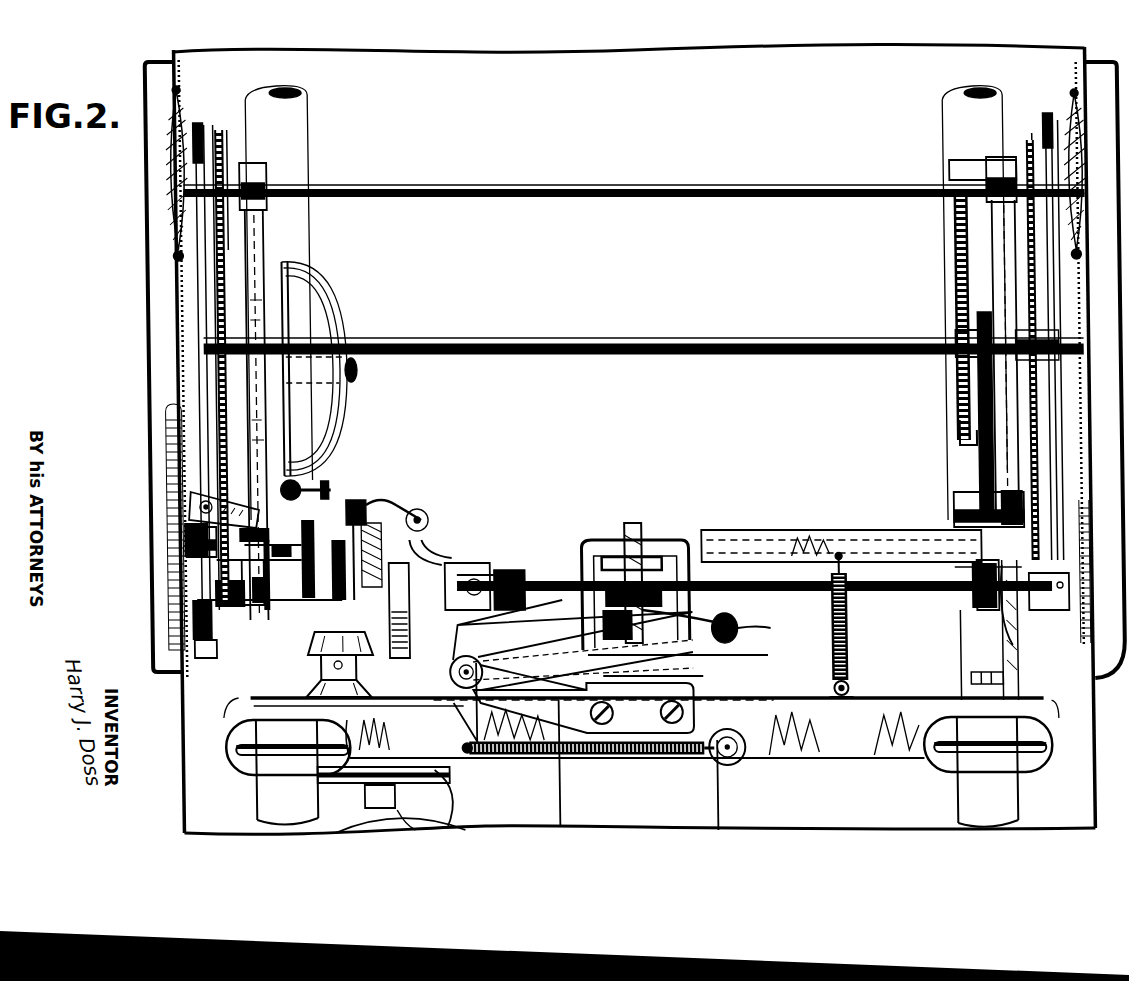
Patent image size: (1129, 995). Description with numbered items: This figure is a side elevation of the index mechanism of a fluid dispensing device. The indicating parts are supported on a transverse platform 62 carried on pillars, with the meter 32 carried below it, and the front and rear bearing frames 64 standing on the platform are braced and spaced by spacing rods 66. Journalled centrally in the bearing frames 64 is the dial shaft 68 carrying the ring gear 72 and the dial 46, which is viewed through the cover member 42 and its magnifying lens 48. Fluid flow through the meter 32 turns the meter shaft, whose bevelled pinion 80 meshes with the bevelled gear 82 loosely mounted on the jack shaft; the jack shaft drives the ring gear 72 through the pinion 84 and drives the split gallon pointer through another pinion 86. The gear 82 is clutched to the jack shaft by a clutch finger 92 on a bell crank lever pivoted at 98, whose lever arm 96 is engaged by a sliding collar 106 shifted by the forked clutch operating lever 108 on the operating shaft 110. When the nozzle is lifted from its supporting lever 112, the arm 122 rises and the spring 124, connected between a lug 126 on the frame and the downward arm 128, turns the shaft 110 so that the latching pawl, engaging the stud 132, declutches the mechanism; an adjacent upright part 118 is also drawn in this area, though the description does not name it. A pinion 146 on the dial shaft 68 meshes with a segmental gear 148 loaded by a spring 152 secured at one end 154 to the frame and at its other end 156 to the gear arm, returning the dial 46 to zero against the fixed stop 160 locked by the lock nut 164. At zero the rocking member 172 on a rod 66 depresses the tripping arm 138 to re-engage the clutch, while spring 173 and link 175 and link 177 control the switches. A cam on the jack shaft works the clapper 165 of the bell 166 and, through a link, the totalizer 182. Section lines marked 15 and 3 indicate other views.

The meter 32 is at (425, 812).
The cover member 42 is at (180, 312).
The dial 46 is at (228, 158).
The magnifying lens 48 is at (183, 170).
The platform 62 is at (866, 752).
The bearing frames 64 is at (262, 254).
The spacing rods 66 is at (466, 185).
The dial shaft 68 is at (478, 340).
The ring gear 72 is at (230, 236).
The bevelled pinion 80 is at (345, 664).
The bevelled gear 82 is at (354, 500).
The pinion 84 is at (1064, 610).
The pinion 86 is at (185, 534).
The clutch finger 92 is at (374, 504).
The lever arm 96 is at (468, 538).
The pivot 98 is at (432, 520).
The collar 106 is at (500, 542).
The clutch operating lever 108 is at (452, 612).
The operating shaft 110 is at (446, 676).
The lever 112 is at (690, 620).
The vertical bar 118 is at (662, 545).
The arm 122 is at (650, 657).
The spring 124 is at (508, 757).
The lug 126 is at (745, 760).
The arm 128 is at (455, 729).
The stud 132 is at (660, 677).
The tripping arm 138 is at (700, 632).
The pinion 146 is at (956, 322).
The segmental gear 148 is at (978, 468).
The spring 152 is at (958, 257).
The fixed attachment point 154 is at (965, 165).
The spring end 156 is at (958, 440).
The fixed stop 160 is at (977, 598).
The lock nut 164 is at (1022, 588).
The clapper 165 is at (345, 468).
The bell 166 is at (333, 285).
The rocking member 172 is at (780, 533).
The spring 173 is at (848, 655).
The link 175 is at (715, 797).
The link 177 is at (557, 798).
The totalizer 182 is at (188, 486).
The section indicator 15 is at (553, 163).
The section indicator 3 is at (672, 141).